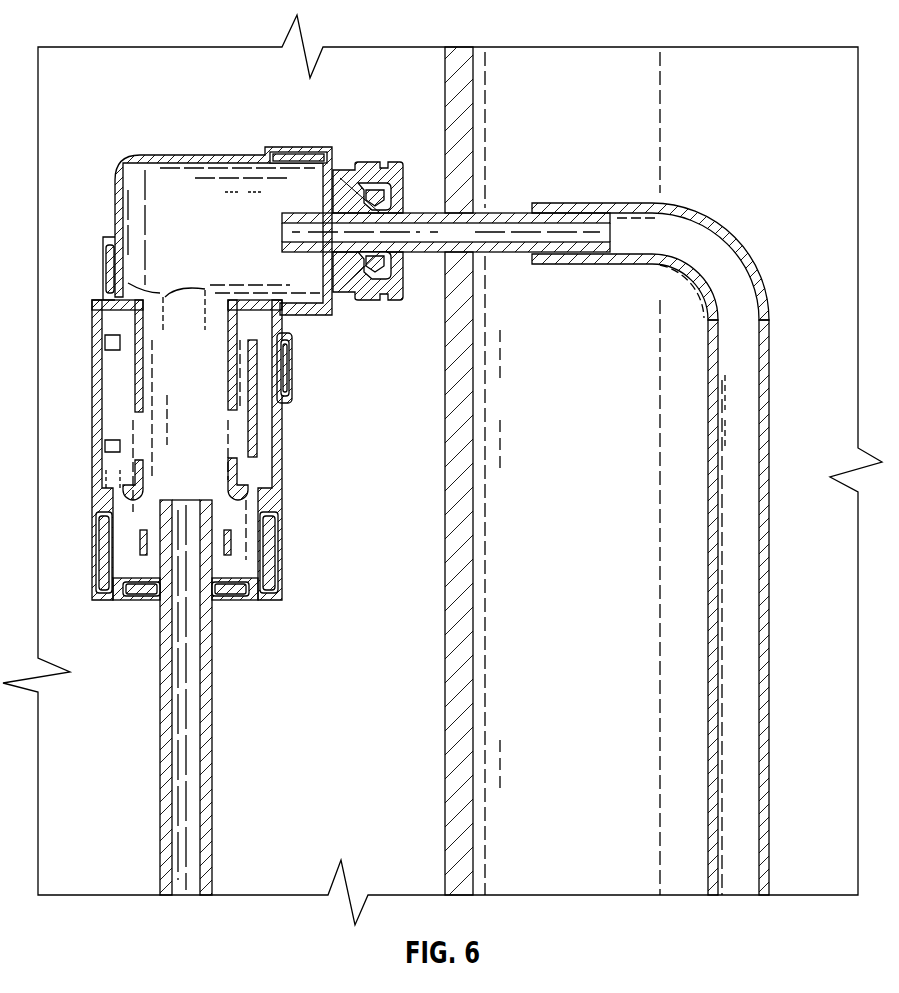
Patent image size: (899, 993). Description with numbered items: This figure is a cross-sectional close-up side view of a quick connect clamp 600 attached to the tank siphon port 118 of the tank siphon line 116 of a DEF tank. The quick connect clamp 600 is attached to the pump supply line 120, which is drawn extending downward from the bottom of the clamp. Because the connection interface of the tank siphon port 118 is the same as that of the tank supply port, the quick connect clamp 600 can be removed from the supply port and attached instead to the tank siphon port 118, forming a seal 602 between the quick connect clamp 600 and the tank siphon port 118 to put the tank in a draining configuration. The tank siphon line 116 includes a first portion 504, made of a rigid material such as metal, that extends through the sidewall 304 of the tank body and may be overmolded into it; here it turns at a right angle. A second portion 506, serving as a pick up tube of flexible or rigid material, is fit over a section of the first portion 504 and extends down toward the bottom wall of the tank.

The quick connect clamp 600 is at (172, 152).
The seal 602 is at (352, 165).
The tank siphon port 118 is at (418, 212).
The tank siphon line 116 is at (420, 256).
The first portion 504 is at (510, 207).
The second portion 506 is at (770, 347).
The sidewall 304 is at (446, 413).
The pump supply line 120 is at (212, 685).